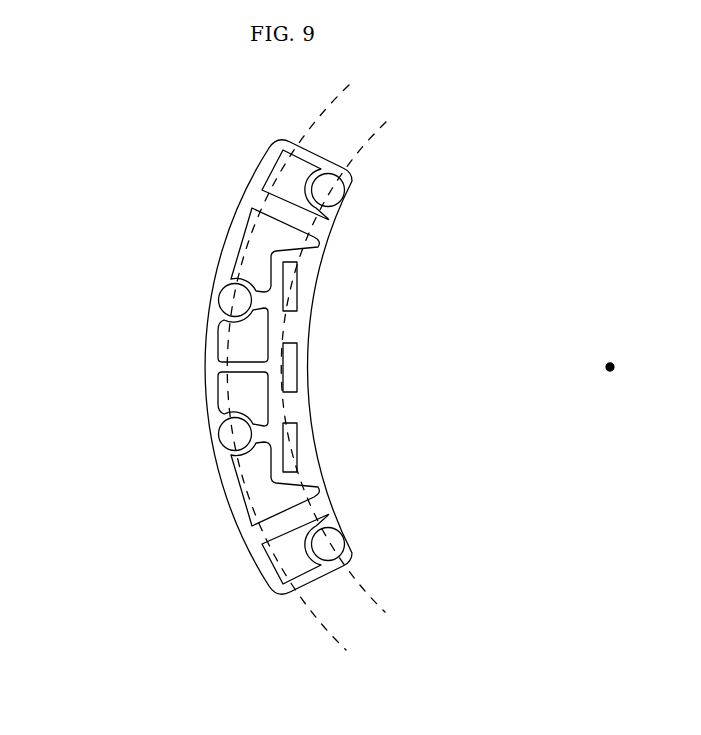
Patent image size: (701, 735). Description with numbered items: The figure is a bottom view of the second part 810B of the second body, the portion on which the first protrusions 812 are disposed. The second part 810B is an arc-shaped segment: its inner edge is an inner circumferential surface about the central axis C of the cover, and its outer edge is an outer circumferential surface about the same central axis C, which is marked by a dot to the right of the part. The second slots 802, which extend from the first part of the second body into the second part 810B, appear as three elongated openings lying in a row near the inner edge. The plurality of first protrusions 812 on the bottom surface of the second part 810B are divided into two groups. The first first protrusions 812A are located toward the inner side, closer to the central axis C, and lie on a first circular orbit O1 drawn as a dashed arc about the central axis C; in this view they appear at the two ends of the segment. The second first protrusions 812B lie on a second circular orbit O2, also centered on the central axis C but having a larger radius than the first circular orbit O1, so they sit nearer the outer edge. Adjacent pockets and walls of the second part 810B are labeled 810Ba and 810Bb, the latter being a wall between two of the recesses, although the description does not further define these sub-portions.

The second part 810B is at (291, 141).
The first portion of second holder 810Ba is at (313, 265).
The partition rib of second holder 810Bb is at (258, 195).
The second slots 802 is at (302, 298).
The first protrusions 812 is at (284, 367).
The first first protrusions 812A is at (336, 193).
The second first protrusions 812B is at (232, 302).
The first circular orbit O1 is at (351, 382).
The second circular orbit O2 is at (304, 380).
The central axis C is at (622, 368).